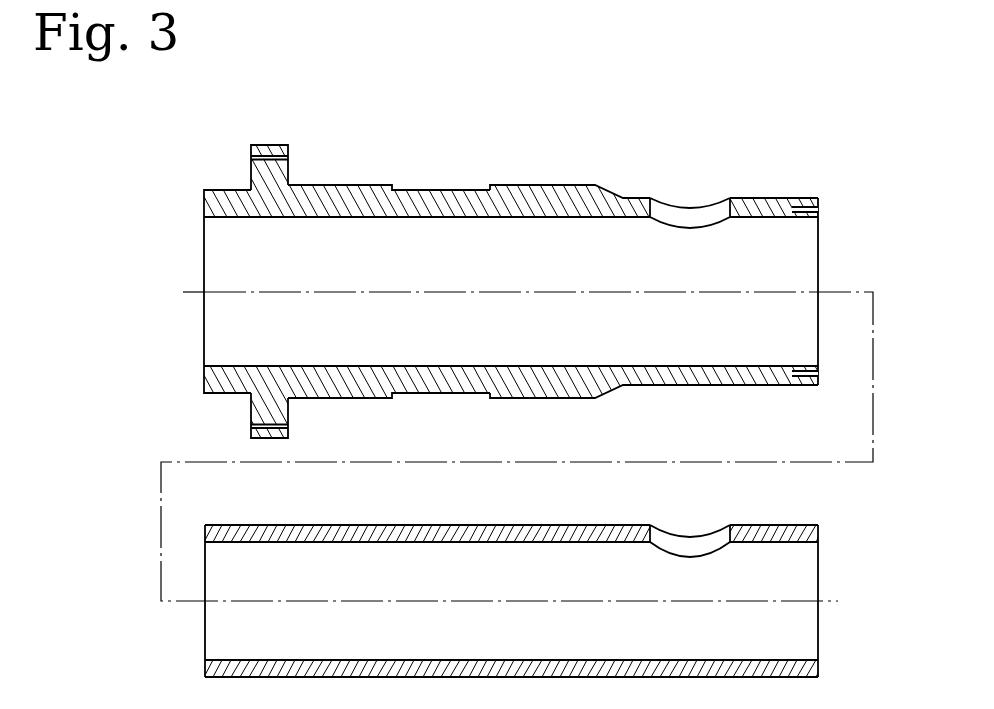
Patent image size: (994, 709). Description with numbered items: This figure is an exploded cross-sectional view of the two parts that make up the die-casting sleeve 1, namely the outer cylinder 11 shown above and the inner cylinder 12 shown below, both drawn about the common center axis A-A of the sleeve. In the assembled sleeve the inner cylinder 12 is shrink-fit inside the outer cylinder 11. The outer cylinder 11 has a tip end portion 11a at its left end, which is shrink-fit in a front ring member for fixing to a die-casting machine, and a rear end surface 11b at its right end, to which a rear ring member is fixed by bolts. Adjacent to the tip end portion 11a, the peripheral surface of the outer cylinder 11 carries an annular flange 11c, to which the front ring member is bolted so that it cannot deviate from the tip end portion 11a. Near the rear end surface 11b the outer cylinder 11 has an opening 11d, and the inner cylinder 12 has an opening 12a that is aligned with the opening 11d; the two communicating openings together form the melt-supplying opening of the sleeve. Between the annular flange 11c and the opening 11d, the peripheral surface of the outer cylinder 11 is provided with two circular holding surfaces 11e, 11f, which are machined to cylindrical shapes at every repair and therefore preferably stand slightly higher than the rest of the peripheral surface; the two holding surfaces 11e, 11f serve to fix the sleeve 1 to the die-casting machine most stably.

The die-casting sleeve 1 is at (65, 205).
The outer cylinder 11 is at (136, 263).
The tip end portion 11a is at (221, 196).
The rear end surface 11b is at (818, 213).
The annular flange 11c is at (271, 149).
The opening 11d is at (690, 214).
The circular holding surface 11e is at (344, 193).
The circular holding surface 11f is at (542, 193).
The inner cylinder 12 is at (136, 574).
The opening 12a is at (688, 538).